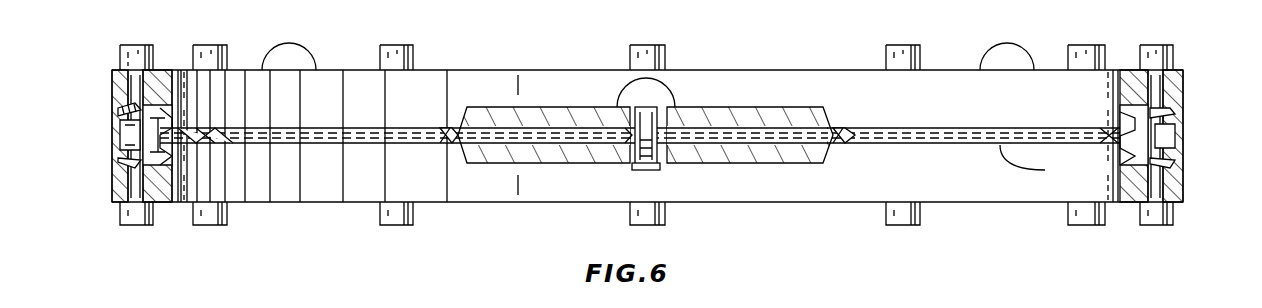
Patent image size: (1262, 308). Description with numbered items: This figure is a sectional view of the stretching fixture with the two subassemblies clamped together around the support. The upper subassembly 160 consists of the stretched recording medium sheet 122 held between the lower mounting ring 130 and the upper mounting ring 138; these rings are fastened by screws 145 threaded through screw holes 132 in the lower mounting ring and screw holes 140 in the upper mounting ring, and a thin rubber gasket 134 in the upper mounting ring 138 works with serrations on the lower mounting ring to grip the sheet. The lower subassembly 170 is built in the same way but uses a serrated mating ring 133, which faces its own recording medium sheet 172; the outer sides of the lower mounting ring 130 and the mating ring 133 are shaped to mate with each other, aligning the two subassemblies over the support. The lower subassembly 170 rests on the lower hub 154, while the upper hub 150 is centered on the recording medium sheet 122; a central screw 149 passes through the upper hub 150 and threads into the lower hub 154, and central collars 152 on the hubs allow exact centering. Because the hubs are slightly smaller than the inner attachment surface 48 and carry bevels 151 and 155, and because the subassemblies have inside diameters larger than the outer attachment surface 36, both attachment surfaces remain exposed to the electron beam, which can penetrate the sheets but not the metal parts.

The outer attachment surface 36 is at (190, 75).
The inner attachment surface 48 is at (455, 130).
The recording medium sheet 122 is at (1000, 128).
The lower mounting ring 130 is at (113, 124).
The screw holes 132 is at (118, 160).
The mating ring 133 is at (113, 148).
The rubber gasket 134 is at (122, 108).
The upper mounting ring 138 is at (955, 75).
The screw holes 140 is at (132, 180).
The screws 145 is at (196, 226).
The screw 149 is at (660, 100).
The upper hub 150 is at (740, 108).
The bevel 151 is at (453, 128).
The central collars 152 is at (640, 115).
The lower hub 154 is at (560, 165).
The bevel 155 is at (455, 165).
The upper subassembly 160 is at (806, 70).
The lower subassembly 170 is at (847, 202).
The recording medium sheet 172 is at (1000, 145).